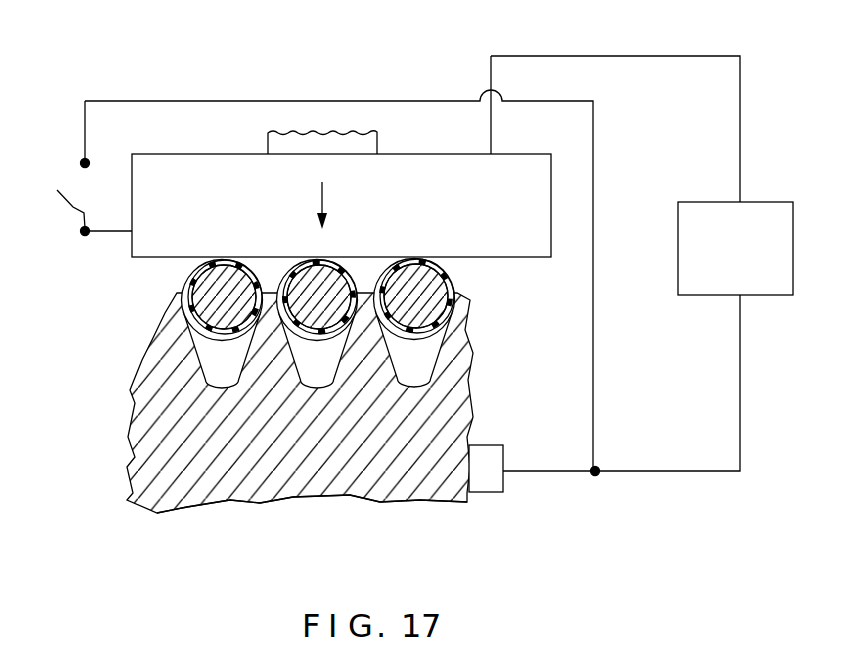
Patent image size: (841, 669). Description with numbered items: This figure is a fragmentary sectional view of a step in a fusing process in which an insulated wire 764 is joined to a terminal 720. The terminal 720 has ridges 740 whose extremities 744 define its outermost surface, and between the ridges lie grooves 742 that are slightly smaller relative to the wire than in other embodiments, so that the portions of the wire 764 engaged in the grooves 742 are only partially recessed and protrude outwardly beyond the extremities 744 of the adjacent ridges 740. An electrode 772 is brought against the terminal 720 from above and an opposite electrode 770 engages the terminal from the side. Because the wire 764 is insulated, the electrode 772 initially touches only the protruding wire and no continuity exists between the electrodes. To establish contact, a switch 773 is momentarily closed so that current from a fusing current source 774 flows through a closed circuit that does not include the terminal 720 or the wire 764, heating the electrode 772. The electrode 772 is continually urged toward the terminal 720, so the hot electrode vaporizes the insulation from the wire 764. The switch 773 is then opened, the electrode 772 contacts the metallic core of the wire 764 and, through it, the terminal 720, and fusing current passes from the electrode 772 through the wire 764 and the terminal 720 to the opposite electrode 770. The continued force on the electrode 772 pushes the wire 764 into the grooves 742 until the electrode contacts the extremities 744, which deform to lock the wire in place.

The terminal 720 is at (409, 509).
The ridges 740 is at (157, 353).
The grooves 742 is at (220, 388).
The extremities of ridges 744 is at (275, 270).
The wire 764 is at (218, 268).
The opposite electrode 770 is at (480, 452).
The electrode 772 is at (503, 233).
The switch 773 is at (71, 209).
The fusing current source 774 is at (690, 213).